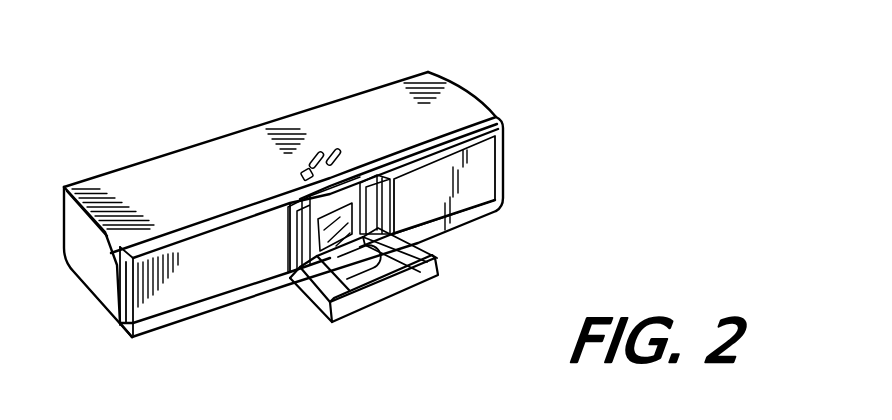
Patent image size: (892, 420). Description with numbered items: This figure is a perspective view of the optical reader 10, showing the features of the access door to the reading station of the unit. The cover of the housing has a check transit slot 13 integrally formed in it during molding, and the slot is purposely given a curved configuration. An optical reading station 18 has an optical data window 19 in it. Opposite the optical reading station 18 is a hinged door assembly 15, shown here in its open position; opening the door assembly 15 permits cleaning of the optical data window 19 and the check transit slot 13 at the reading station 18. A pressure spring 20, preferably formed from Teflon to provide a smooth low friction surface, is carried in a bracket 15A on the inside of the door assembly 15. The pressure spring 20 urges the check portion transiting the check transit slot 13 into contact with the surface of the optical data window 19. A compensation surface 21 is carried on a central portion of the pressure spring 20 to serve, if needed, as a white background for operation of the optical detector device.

The reader 10 is at (474, 45).
The check transit slot 13 is at (477, 115).
The hinged door assembly 15 is at (415, 283).
The bracket 15A is at (303, 300).
The optical reading station 18 is at (340, 190).
The optical data window 19 is at (328, 214).
The pressure spring 20 is at (356, 278).
The compensation surface 21 is at (426, 246).